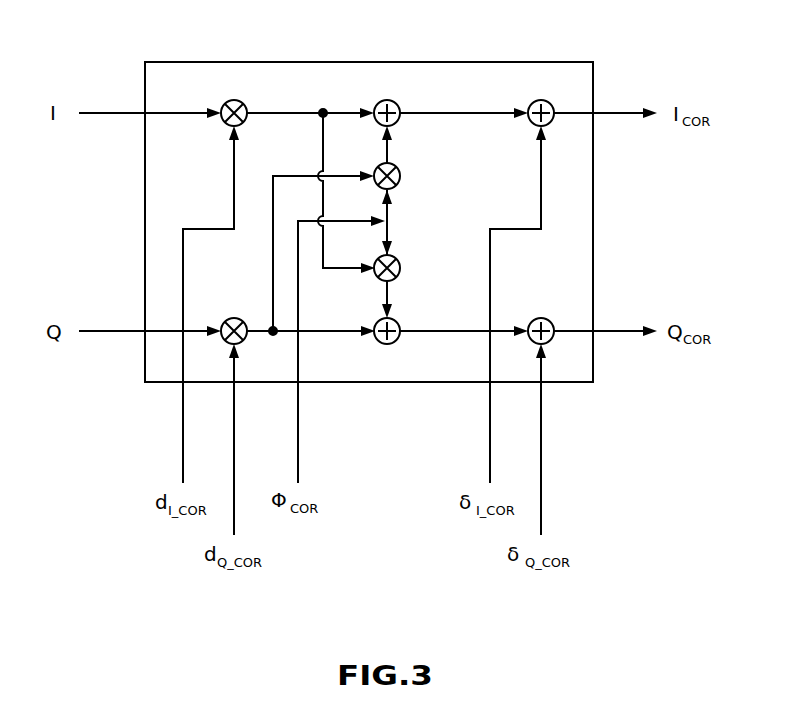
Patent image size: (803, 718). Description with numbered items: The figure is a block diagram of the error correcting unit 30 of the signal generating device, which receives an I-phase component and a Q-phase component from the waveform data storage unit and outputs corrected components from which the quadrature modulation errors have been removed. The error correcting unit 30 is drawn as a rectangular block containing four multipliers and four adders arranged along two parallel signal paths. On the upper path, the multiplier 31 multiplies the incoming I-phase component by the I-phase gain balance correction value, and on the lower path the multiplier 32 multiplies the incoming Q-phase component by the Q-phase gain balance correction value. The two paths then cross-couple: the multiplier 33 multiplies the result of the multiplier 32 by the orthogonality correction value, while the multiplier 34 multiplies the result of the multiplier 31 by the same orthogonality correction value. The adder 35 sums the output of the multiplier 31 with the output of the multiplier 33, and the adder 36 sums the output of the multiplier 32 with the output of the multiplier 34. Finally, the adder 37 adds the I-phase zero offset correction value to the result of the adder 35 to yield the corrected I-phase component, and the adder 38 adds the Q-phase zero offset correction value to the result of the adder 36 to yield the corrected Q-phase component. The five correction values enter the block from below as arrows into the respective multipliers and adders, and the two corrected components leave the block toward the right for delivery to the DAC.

The error correcting unit 30 is at (456, 62).
The multiplier 31 is at (247, 104).
The multiplier 32 is at (229, 319).
The multiplier 33 is at (399, 167).
The multiplier 34 is at (399, 259).
The adder 35 is at (399, 104).
The adder 36 is at (399, 322).
The adder 37 is at (552, 104).
The adder 38 is at (552, 322).